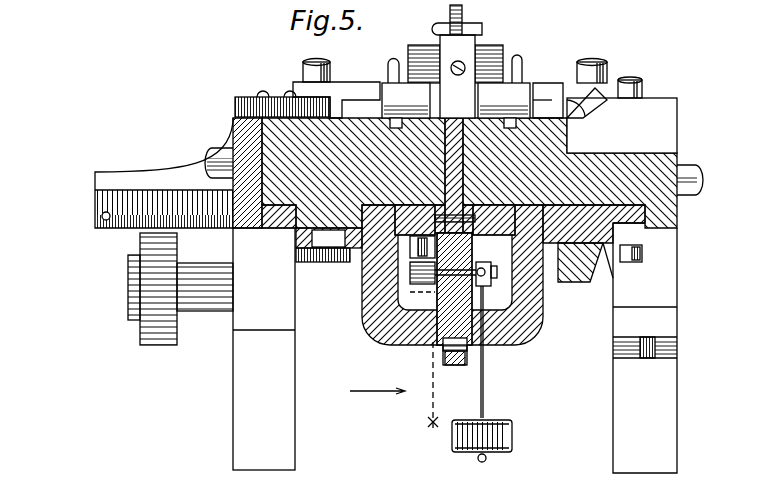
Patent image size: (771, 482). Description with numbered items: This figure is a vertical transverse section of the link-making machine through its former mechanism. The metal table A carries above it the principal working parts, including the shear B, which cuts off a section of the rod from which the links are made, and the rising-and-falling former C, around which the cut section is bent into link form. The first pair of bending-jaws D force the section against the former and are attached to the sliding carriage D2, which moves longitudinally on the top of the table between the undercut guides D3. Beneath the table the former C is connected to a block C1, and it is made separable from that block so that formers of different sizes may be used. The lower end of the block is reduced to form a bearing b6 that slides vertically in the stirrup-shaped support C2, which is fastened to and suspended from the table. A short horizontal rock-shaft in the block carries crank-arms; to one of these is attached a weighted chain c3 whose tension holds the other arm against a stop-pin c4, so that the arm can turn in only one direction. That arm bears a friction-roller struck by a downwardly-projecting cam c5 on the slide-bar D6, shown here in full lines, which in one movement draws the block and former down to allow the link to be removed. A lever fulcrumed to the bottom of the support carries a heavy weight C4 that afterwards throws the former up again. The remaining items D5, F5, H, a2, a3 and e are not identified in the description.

The table A is at (455, 173).
The shear B is at (583, 103).
The former C is at (465, 147).
The stirrup-shaped support C2 is at (370, 335).
The bending-jaws D is at (456, 86).
The sliding carriage D2 is at (505, 50).
The undercut guides D3 is at (322, 86).
The pin D5 is at (463, 16).
The slide-bar D6 is at (415, 220).
The block F5 is at (494, 220).
The bearing block H is at (329, 245).
The foot a2 is at (396, 128).
The foot a3 is at (512, 128).
The weighted chain c3 is at (487, 382).
The stop-pin c4 is at (412, 258).
The heavy weight C4 is at (415, 291).
The cam c5 is at (406, 268).
The rod e is at (456, 266).
The block C1 is at (490, 279).
The bearing b6 is at (455, 339).